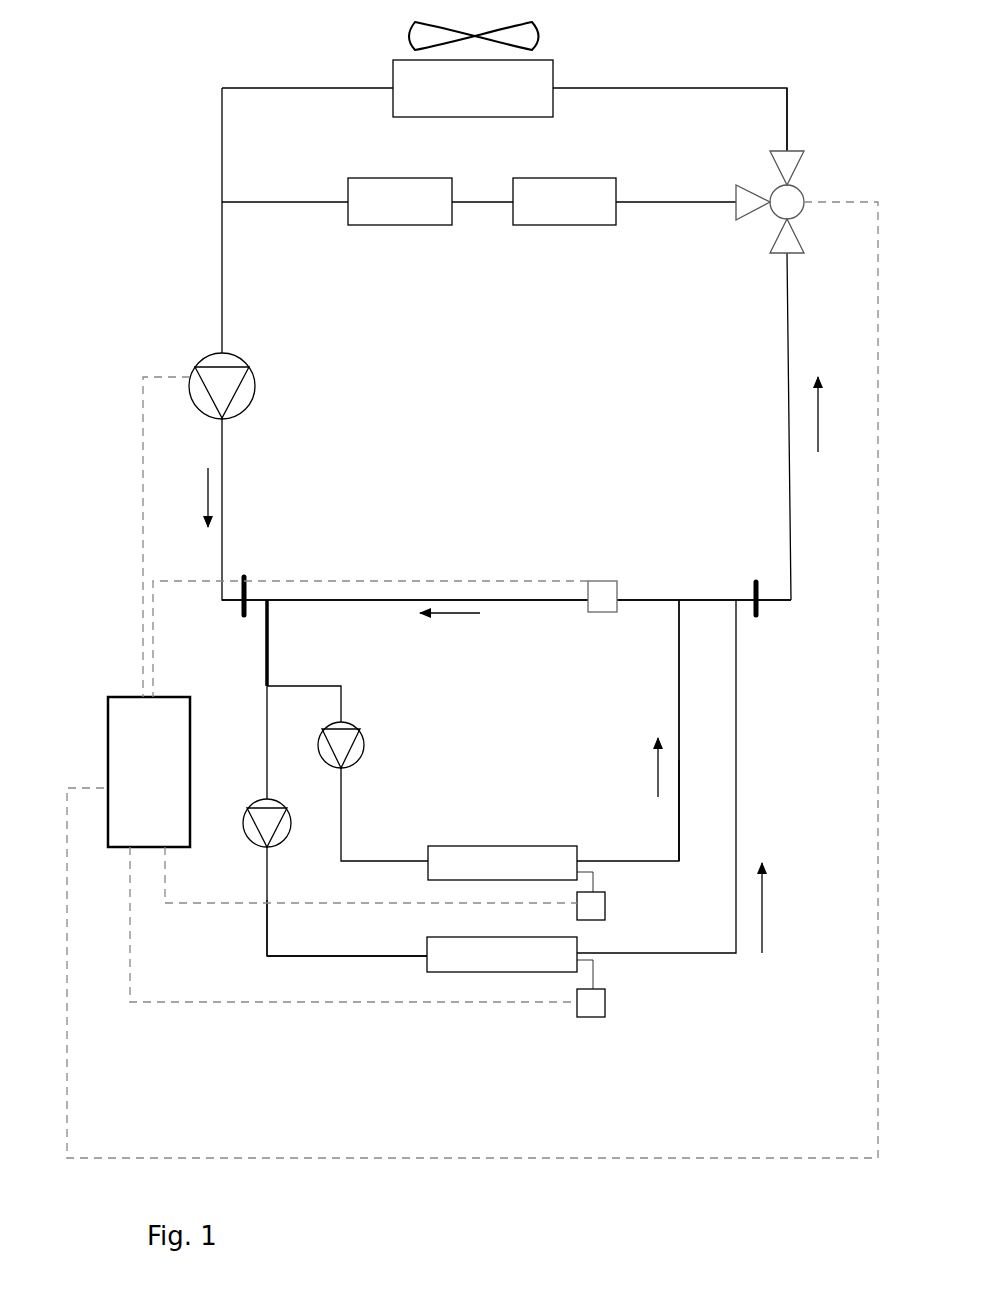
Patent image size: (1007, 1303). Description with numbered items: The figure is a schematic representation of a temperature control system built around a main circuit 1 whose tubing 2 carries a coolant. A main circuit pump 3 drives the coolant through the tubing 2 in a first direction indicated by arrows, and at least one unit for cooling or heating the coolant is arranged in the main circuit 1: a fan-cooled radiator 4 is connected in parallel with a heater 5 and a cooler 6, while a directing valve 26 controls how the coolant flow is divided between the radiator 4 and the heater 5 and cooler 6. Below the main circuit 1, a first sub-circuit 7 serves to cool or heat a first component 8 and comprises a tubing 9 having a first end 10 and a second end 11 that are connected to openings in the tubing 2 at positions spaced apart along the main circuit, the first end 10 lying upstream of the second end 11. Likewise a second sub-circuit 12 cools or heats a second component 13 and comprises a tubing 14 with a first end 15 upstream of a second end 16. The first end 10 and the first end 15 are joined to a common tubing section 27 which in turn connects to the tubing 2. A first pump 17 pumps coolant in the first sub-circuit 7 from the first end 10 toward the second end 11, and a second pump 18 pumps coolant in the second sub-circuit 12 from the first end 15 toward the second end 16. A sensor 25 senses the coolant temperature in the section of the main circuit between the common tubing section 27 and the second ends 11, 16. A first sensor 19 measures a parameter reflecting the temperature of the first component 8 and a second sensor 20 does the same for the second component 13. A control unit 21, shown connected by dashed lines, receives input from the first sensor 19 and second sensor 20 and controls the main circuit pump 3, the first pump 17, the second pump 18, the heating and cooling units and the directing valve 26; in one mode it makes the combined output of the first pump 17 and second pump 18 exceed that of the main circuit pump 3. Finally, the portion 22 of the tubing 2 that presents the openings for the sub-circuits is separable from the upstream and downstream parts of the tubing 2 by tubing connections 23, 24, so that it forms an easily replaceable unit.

The main circuit 1 is at (757, 87).
The tubing 2 is at (788, 110).
The main circuit pump 3 is at (200, 365).
The fan-cooled radiator 4 is at (393, 67).
The heater 5 is at (420, 225).
The cooler 6 is at (590, 225).
The first sub-circuit 7 is at (362, 957).
The first component 8 is at (508, 972).
The tubing 9 is at (262, 938).
The first end 10 is at (265, 705).
The second end 11 is at (737, 600).
The second sub-circuit 12 is at (681, 811).
The second component 13 is at (470, 846).
The tubing 14 is at (679, 730).
The first end 15 is at (328, 686).
The second end 16 is at (679, 600).
The first pump 17 is at (252, 805).
The second pump 18 is at (363, 742).
The first sensor 19 is at (605, 1010).
The second sensor 20 is at (605, 907).
The control unit 21 is at (108, 745).
The portion 22 is at (632, 600).
The tubing connection 23 is at (244, 577).
The tubing connection 24 is at (759, 612).
The sensor 25 is at (588, 581).
The directing valve 26 is at (799, 186).
The common tubing section 27 is at (265, 642).